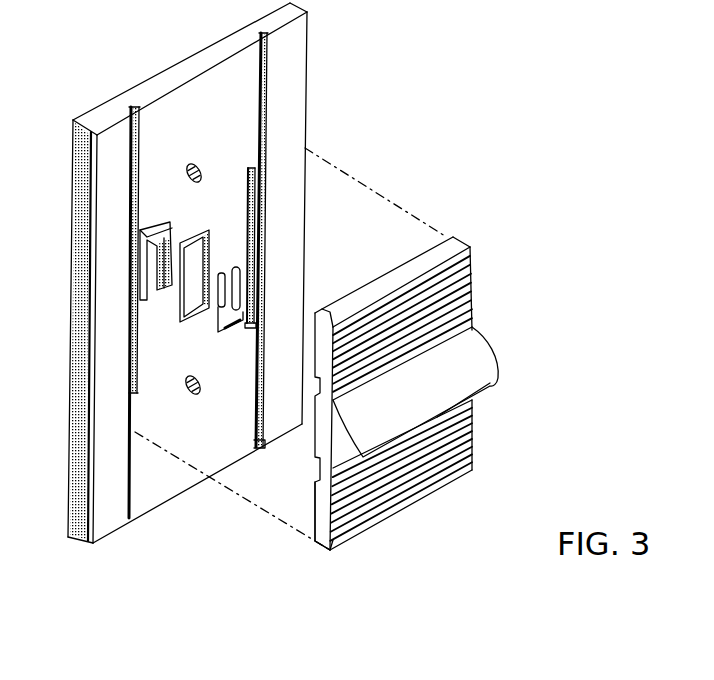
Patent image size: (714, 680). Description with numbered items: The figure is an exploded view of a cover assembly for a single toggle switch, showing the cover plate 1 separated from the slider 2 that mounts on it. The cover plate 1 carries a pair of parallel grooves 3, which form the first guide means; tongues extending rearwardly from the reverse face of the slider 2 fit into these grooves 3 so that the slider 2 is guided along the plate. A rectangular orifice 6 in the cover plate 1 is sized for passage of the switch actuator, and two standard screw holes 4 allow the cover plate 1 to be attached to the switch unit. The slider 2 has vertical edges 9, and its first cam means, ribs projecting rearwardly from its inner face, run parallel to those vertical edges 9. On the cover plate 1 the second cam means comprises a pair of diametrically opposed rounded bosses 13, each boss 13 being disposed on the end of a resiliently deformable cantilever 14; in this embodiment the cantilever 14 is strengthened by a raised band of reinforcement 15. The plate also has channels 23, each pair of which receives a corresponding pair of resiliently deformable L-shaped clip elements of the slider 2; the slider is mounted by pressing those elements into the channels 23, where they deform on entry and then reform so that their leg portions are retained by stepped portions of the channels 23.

The cover plate 1 is at (312, 61).
The slider 2 is at (484, 308).
The parallel grooves 3 is at (130, 152).
The screw holes 4 is at (213, 170).
The rectangular orifice 6 is at (216, 255).
The vertical edges 9 is at (324, 514).
The rounded bosses 13 is at (143, 214).
The resiliently deformable cantilever 14 is at (147, 302).
The raised band of reinforcement 15 is at (253, 282).
The channels 23 is at (236, 222).